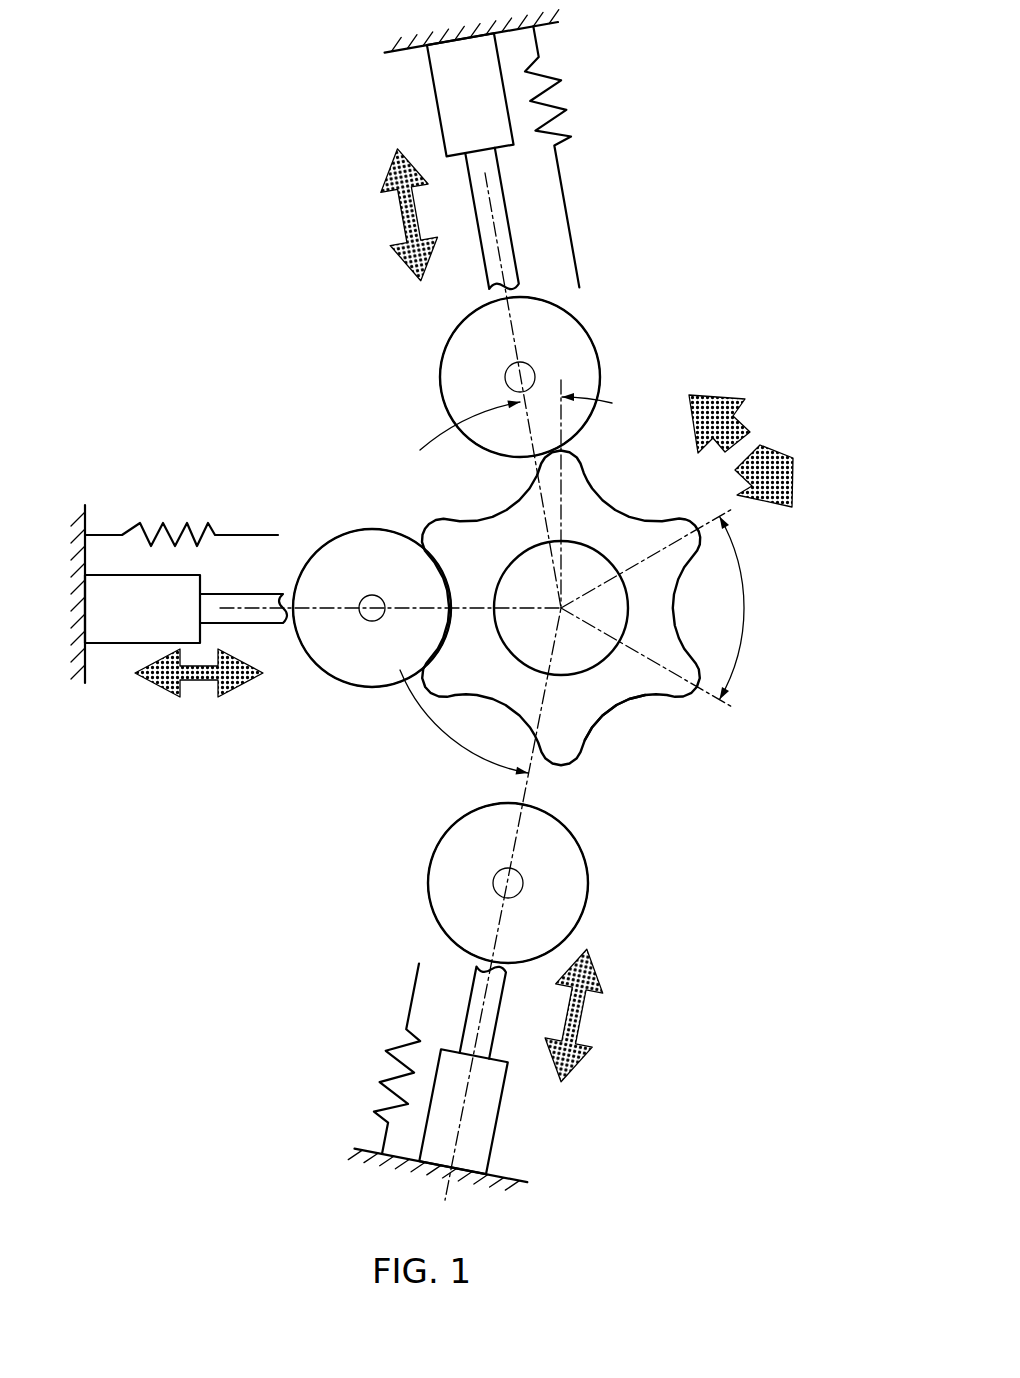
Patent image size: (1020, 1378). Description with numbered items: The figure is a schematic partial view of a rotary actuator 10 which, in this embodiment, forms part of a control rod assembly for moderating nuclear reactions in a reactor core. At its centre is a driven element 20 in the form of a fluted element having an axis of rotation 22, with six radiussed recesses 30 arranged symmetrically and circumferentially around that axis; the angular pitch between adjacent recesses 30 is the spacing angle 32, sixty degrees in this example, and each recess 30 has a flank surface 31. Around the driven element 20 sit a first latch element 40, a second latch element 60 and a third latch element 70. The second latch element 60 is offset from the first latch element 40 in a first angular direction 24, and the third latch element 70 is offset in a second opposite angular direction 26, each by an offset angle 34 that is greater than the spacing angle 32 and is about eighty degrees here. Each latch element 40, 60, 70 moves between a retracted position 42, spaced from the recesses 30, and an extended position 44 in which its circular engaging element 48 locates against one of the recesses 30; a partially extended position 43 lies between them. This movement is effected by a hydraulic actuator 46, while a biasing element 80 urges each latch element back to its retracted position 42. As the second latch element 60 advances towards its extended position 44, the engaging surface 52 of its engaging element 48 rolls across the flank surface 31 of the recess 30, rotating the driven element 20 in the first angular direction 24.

The rotary actuator 10 is at (225, 232).
The driven element 20 is at (561, 604).
The axis of rotation 22 is at (570, 622).
The first angular direction 24 is at (795, 472).
The second opposite angular direction 26 is at (725, 393).
The recesses 30 is at (618, 512).
The flank surface 31 is at (588, 735).
The spacing angle 32 is at (742, 597).
The offset angle 34 is at (545, 392).
The first latch element 40 is at (305, 660).
The retracted position 42 is at (360, 937).
The partially extended position 43 is at (592, 160).
The extended position 44 is at (260, 497).
The hydraulic actuator 46 is at (120, 645).
The circular engaging element 48 is at (345, 688).
The engaging surface 52 is at (352, 527).
The second latch element 60 is at (580, 320).
The third latch element 70 is at (588, 883).
The biasing element 80 is at (110, 535).